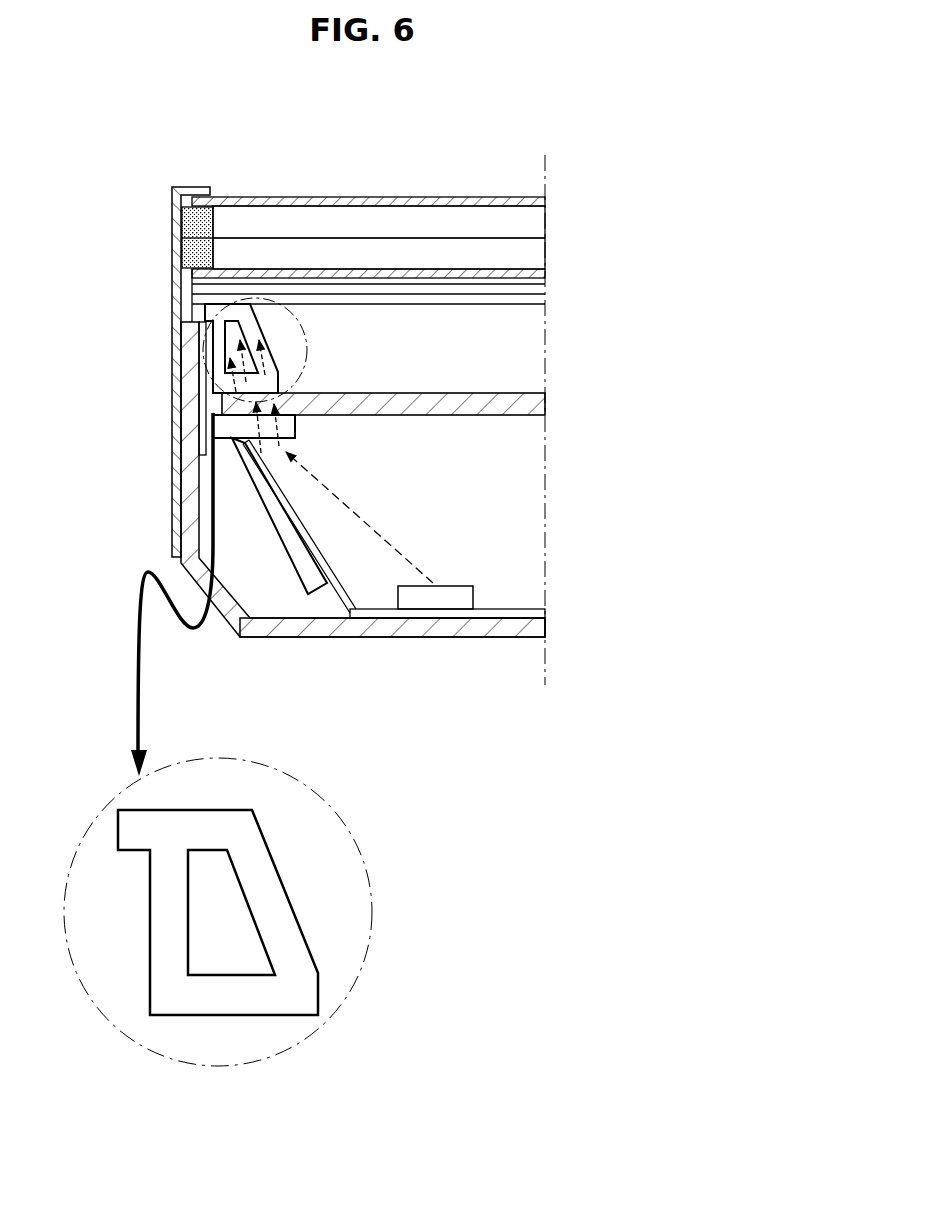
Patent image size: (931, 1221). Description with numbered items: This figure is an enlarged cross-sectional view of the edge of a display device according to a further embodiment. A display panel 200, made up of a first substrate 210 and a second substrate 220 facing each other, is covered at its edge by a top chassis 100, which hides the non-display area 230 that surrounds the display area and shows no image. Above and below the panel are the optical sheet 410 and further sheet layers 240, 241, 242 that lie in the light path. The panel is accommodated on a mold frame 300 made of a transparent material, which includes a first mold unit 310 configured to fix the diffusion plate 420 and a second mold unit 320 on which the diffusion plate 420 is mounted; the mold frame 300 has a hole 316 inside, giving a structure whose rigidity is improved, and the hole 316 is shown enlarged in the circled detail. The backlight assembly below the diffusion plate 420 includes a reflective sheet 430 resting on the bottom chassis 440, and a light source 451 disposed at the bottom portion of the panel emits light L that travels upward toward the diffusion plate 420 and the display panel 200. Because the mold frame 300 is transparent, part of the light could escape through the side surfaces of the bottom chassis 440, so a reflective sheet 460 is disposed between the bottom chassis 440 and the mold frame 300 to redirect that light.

The top chassis 100 is at (176, 188).
The display panel 200 is at (436, 237).
The first substrate 210 is at (538, 254).
The second substrate 220 is at (538, 223).
The non-display area 230 is at (196, 223).
The optical sheet 240 is at (368, 187).
The lower optical sheet 241 is at (442, 269).
The upper optical sheet 242 is at (378, 197).
The mold frame 300 is at (246, 659).
The first mold unit 310 is at (225, 380).
The hole 316 is at (222, 935).
The second mold unit 320 is at (218, 428).
The optical sheet 410 is at (553, 279).
The diffusion plate 420 is at (522, 406).
The reflective sheet 430 is at (497, 613).
The bottom chassis 440 is at (425, 640).
The light source 451 is at (460, 597).
The reflective sheet 460 is at (200, 332).
The light L is at (373, 528).